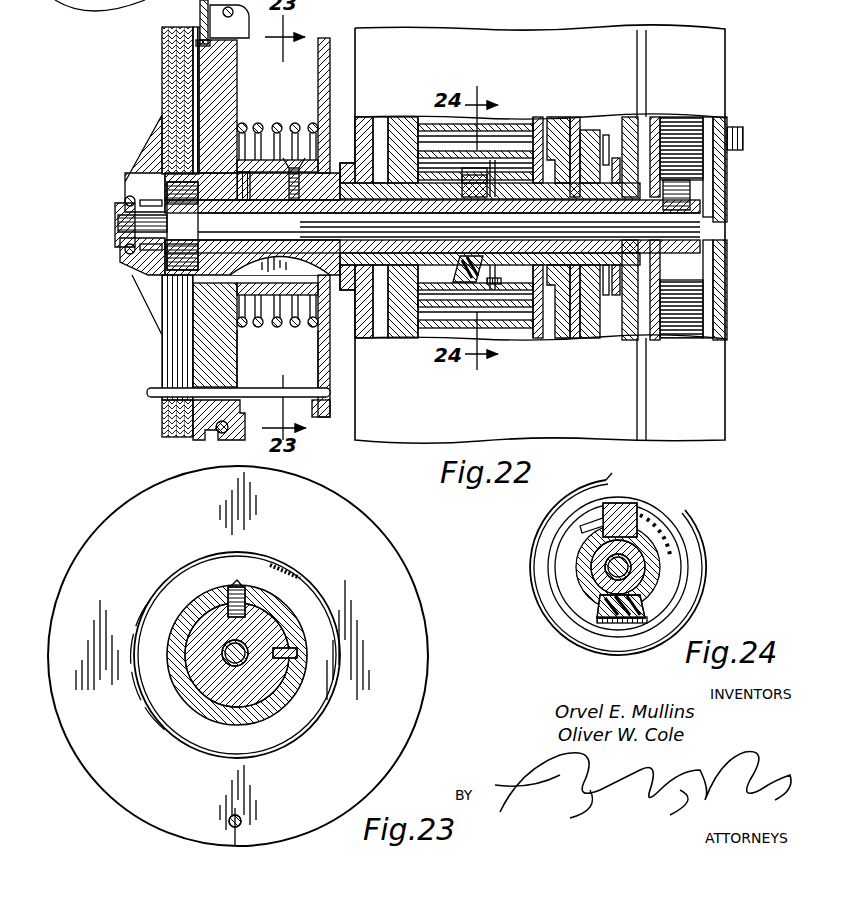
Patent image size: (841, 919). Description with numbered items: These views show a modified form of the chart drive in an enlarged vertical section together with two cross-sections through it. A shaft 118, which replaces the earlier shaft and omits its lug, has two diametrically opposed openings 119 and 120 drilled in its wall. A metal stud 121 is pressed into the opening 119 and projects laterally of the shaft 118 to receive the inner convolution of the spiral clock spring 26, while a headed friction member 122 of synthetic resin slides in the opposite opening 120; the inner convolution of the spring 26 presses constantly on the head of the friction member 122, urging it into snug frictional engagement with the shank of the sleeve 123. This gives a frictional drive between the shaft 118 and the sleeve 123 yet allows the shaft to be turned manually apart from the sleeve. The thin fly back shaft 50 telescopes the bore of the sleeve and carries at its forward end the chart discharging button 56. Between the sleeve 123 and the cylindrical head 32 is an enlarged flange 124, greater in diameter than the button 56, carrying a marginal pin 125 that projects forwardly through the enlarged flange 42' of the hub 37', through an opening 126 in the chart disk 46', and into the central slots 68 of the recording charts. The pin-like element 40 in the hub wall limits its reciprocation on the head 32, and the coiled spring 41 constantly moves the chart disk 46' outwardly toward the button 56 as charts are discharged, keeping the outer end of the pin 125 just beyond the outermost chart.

In FIG. 22, the clock spring 26 is at (435, 328).
In FIG. 24, the clock spring 26 is at (572, 638).
In FIG. 22, the cylindrical head 32 is at (293, 170).
In FIG. 23, the cylindrical head 32 is at (262, 703).
In FIG. 22, the hub 37' is at (277, 212).
In FIG. 23, the hub 37' is at (257, 666).
In FIG. 23, the pin-like element 40 is at (241, 590).
In FIG. 22, the coiled spring 41 is at (298, 330).
In FIG. 23, the coiled spring 41 is at (305, 582).
In FIG. 22, the enlarged flange 42' is at (181, 335).
In FIG. 22, the chart disk 46' is at (190, 427).
In FIG. 22, the fly back shaft 50 is at (700, 224).
In FIG. 24, the fly back shaft 50 is at (608, 566).
In FIG. 22, the chart discharging button 56 is at (152, 152).
In FIG. 22, the central slot 68 is at (163, 303).
In FIG. 22, the shaft 118 is at (397, 190).
In FIG. 24, the shaft 118 is at (668, 570).
In FIG. 22, the opening 119 is at (523, 190).
In FIG. 22, the opening 120 is at (505, 295).
In FIG. 22, the metal stud 121 is at (490, 185).
In FIG. 24, the metal stud 121 is at (640, 515).
In FIG. 22, the friction member 122 is at (492, 268).
In FIG. 24, the friction member 122 is at (672, 612).
In FIG. 22, the sleeve 123 is at (577, 195).
In FIG. 24, the sleeve 123 is at (602, 582).
In FIG. 22, the flange 124 is at (320, 425).
In FIG. 23, the flange 124 is at (112, 785).
In FIG. 22, the marginal pin 125 is at (264, 392).
In FIG. 23, the marginal pin 125 is at (232, 822).
In FIG. 22, the opening 126 is at (188, 414).